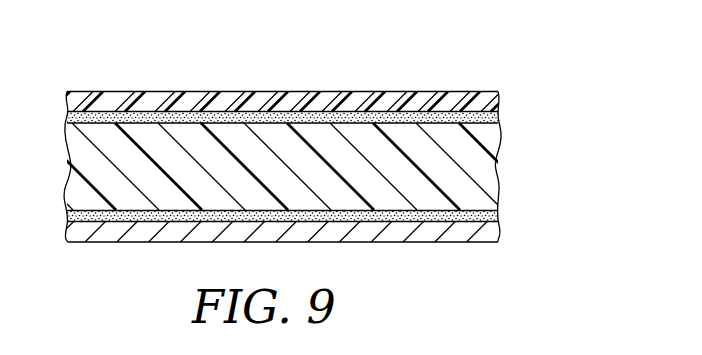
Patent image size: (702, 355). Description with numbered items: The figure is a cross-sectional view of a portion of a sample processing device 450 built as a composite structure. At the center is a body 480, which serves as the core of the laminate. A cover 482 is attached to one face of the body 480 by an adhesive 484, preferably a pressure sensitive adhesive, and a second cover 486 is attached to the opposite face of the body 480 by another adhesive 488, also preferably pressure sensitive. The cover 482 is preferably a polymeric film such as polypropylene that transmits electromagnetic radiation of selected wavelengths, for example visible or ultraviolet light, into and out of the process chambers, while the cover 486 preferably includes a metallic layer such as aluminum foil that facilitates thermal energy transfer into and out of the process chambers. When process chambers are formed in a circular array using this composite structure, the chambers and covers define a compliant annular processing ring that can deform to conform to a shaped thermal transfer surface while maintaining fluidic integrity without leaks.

The device 450 is at (523, 56).
The body 480 is at (493, 177).
The cover 482 is at (448, 92).
The adhesive 484 is at (500, 113).
The cover 486 is at (455, 235).
The adhesive 488 is at (500, 215).